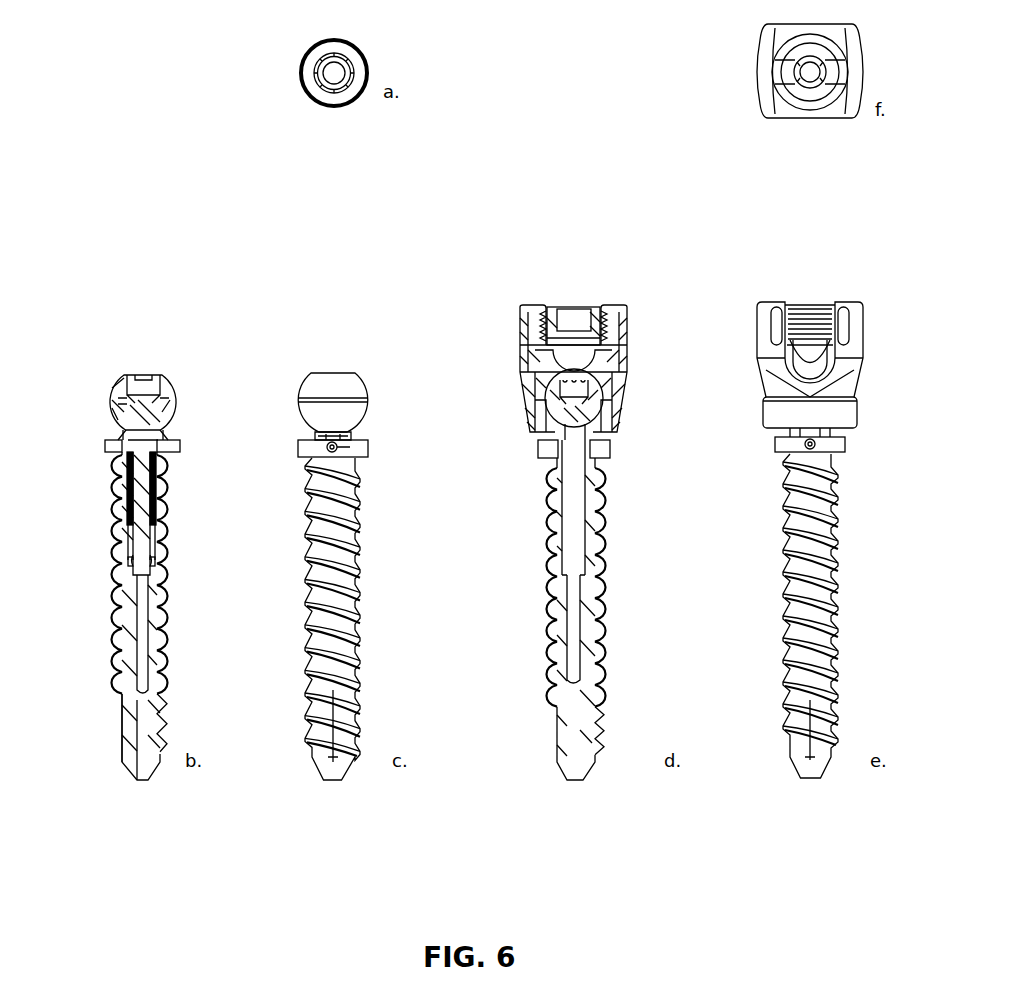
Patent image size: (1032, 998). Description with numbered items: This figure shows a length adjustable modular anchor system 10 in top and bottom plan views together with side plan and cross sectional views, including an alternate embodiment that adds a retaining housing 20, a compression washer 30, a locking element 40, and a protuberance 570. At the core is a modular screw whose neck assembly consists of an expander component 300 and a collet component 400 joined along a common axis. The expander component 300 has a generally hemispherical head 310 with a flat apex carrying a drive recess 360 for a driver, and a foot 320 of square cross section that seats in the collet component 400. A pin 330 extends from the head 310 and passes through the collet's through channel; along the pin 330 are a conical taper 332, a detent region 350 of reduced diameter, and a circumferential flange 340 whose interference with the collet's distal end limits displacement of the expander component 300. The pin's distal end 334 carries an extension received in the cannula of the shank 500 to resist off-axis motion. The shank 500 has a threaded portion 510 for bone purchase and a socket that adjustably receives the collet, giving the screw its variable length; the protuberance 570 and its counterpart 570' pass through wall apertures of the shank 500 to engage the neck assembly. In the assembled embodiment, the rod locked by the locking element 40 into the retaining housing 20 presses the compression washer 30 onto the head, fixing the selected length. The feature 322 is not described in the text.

The length adjustable modular anchor system 10 is at (758, 276).
The retaining housing 20 is at (533, 306).
The compression washer 30 is at (585, 350).
The locking element 40 is at (810, 95).
The expander component 300 is at (318, 100).
The head 310 is at (112, 378).
The foot 320 is at (112, 413).
The neck portion 322 is at (168, 440).
The pin 330 is at (128, 497).
The taper 332 is at (125, 562).
The distal end 334 is at (138, 630).
The circumferential flange 340 is at (125, 575).
The detent region 350 is at (163, 557).
The drive recess 360 is at (143, 377).
The collet component 400 is at (188, 412).
The shank 500 is at (188, 468).
The threaded portion 510 is at (112, 687).
The protuberance 570 is at (430, 449).
The washer half 570' is at (219, 449).